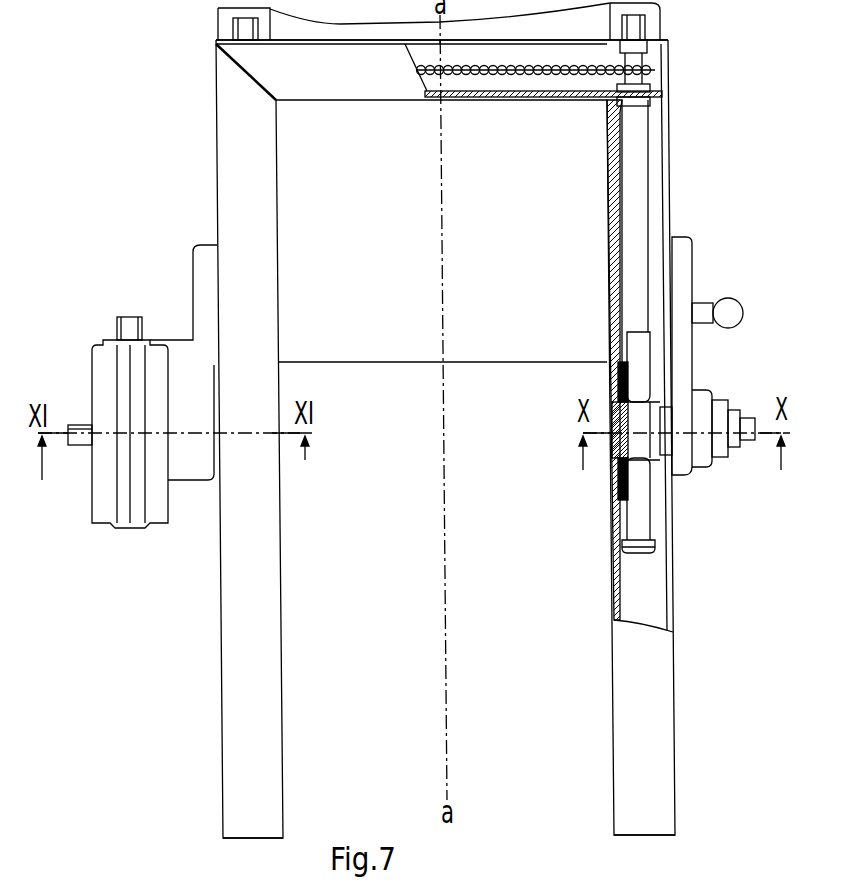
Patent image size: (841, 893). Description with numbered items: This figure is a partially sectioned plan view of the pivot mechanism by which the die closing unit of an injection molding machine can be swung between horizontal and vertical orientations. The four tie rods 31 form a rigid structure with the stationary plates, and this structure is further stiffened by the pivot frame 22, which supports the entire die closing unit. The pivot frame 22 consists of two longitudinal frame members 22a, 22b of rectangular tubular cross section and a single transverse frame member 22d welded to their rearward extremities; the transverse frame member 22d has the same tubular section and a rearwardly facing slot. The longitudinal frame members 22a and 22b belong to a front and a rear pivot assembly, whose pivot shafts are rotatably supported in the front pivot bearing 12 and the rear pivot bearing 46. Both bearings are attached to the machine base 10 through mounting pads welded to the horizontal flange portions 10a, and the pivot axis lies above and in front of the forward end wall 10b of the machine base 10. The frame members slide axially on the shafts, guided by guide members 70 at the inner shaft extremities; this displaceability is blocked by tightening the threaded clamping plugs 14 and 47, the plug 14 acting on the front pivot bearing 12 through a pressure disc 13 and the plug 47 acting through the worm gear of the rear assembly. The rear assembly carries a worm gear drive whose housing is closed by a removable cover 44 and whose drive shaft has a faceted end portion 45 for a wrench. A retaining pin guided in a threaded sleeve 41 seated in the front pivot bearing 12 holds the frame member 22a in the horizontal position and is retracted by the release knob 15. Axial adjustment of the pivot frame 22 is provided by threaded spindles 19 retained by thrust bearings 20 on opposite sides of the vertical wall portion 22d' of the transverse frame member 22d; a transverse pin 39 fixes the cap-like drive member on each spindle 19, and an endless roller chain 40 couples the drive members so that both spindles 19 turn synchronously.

The machine base 10 is at (315, 193).
The horizontal flange portions 10a is at (228, 16).
The forward end wall 10b is at (380, 362).
The front pivot bearing 12 is at (681, 247).
The pressure disc 13 is at (712, 467).
The threaded clamping plug 14 is at (741, 440).
The release knob 15 is at (740, 302).
The spindle 19 is at (640, 530).
The thrust bearings 20 is at (640, 106).
The pivot frame 22 is at (244, 88).
The longitudinal frame member 22a is at (655, 670).
The longitudinal frame member 22b is at (255, 662).
The transverse frame member 22d is at (442, 31).
The vertical wall portion 22d' is at (593, 98).
The tie rods 31 is at (162, 20).
The transverse pin 39 is at (665, 76).
The endless roller chain 40 is at (548, 76).
The threaded sleeve 41 is at (707, 298).
The removable cover 44 is at (102, 368).
The faceted end portion 45 is at (131, 325).
The rear pivot bearing 46 is at (190, 460).
The threaded clamping plug 47 is at (82, 445).
The guide members 70 is at (615, 480).